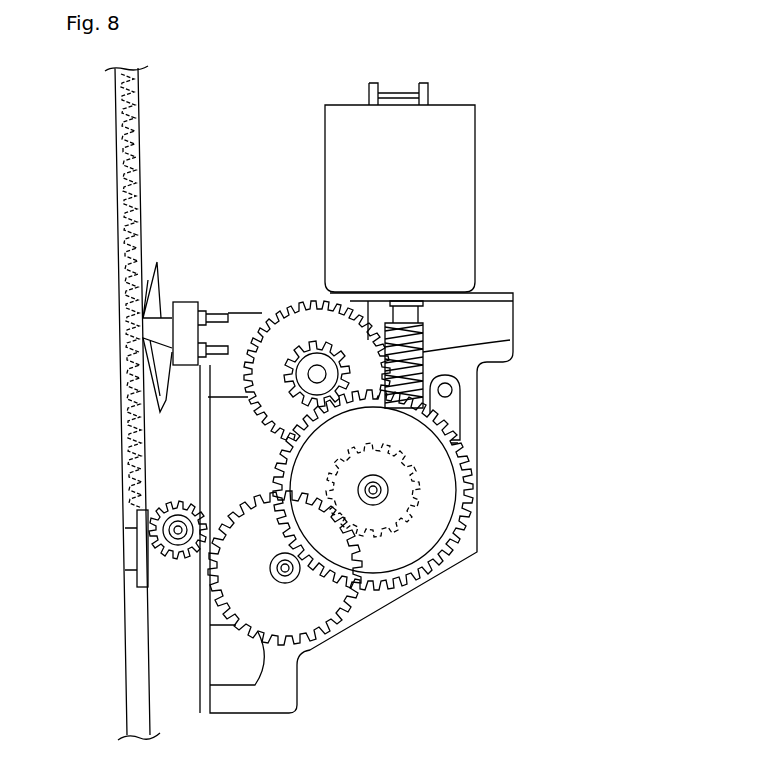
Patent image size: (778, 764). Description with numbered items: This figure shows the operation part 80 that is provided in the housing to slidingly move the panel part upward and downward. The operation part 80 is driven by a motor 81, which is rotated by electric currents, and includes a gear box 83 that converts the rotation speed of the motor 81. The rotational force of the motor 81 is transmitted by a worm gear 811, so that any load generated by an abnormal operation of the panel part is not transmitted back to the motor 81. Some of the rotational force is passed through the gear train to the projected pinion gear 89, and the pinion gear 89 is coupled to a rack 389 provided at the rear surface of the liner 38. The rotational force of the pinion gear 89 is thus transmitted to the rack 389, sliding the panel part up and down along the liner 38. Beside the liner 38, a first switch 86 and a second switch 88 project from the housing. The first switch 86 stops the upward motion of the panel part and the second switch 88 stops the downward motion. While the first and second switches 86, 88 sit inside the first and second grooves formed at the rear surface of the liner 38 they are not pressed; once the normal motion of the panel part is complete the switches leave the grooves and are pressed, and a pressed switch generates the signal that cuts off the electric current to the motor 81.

The liner 38 is at (127, 668).
The rack 389 is at (138, 128).
The operation part 80 is at (497, 262).
The motor 81 is at (335, 138).
The worm gear 811 is at (510, 340).
The gear box 83 is at (385, 607).
The first switch 86 is at (153, 268).
The second switch 88 is at (147, 396).
The pinion gear 89 is at (157, 540).